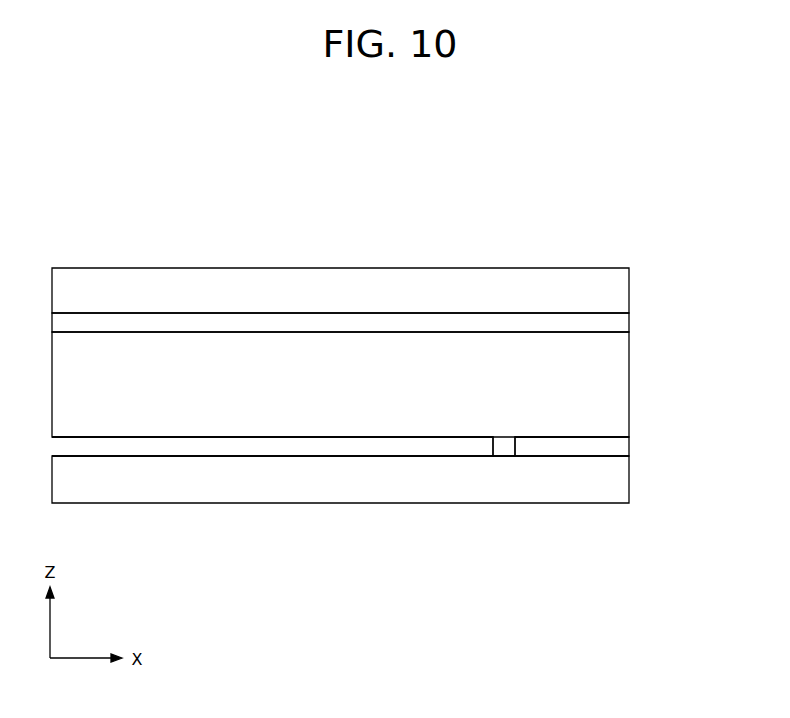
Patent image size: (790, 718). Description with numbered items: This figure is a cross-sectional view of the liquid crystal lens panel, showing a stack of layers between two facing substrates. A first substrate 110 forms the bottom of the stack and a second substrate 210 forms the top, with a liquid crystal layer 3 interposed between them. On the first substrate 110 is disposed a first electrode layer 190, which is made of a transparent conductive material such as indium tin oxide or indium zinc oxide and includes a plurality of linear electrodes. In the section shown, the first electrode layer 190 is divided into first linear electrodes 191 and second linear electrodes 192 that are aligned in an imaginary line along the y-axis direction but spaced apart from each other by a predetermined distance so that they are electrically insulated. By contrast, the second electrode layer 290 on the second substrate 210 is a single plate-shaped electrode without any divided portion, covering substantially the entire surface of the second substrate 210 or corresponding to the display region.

The second substrate 210 is at (612, 289).
The second electrode layer 290 is at (612, 322).
The liquid crystal layer 3 is at (612, 385).
The first electrode layer 190 is at (453, 585).
The first linear electrodes 191 is at (443, 444).
The second linear electrodes 192 is at (566, 444).
The first substrate 110 is at (612, 481).